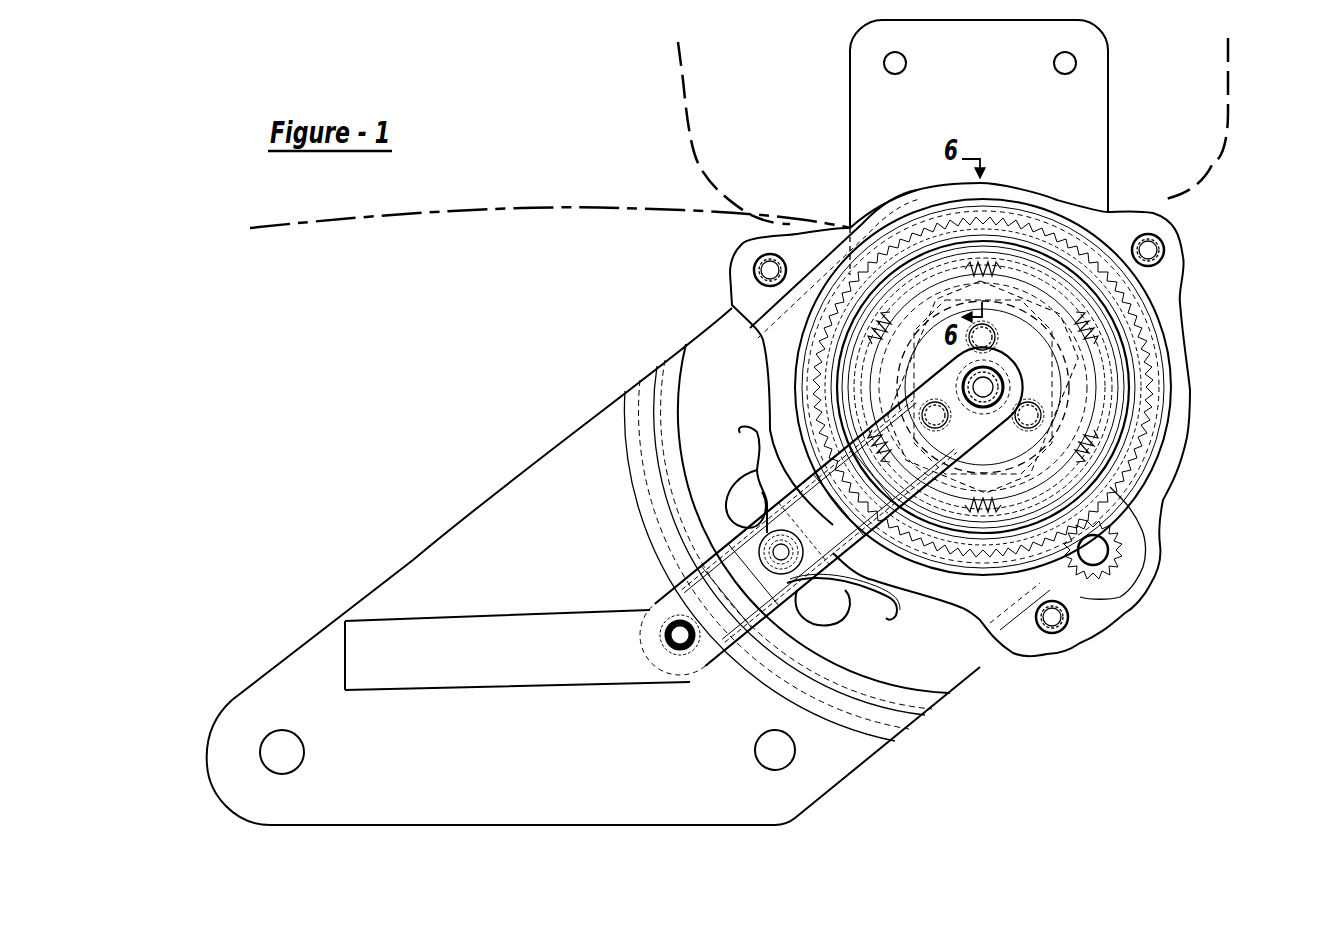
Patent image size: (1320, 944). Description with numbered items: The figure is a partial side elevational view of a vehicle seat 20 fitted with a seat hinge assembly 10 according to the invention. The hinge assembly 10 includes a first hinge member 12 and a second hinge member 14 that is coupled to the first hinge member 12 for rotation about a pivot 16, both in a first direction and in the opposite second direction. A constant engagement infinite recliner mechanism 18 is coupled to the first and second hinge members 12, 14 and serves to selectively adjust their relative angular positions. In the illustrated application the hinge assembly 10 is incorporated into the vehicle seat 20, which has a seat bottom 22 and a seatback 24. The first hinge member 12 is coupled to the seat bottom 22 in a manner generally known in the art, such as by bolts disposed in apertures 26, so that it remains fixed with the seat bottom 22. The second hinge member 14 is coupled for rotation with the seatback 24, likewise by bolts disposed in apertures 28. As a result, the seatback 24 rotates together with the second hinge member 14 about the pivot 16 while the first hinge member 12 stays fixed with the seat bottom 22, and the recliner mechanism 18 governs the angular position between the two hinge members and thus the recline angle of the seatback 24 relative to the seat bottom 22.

The hinge assembly 10 is at (1218, 308).
The first hinge member 12 is at (485, 535).
The second hinge member 14 is at (1082, 140).
The pivot 16 is at (987, 387).
The constant engagement infinite recliner mechanism 18 is at (962, 618).
The vehicle seat 20 is at (590, 146).
The seat bottom 22 is at (448, 212).
The seatback 24 is at (682, 64).
The apertures 26 is at (300, 742).
The apertures 28 is at (884, 64).